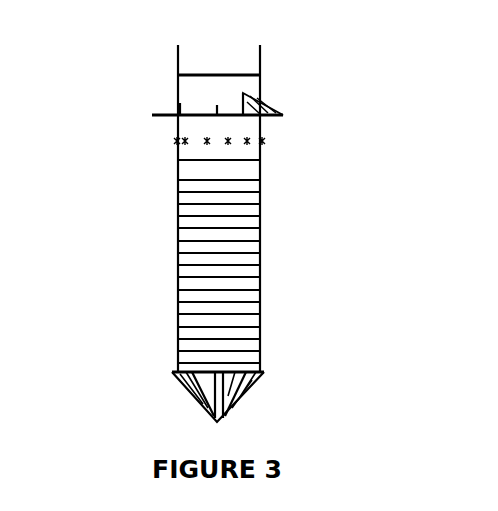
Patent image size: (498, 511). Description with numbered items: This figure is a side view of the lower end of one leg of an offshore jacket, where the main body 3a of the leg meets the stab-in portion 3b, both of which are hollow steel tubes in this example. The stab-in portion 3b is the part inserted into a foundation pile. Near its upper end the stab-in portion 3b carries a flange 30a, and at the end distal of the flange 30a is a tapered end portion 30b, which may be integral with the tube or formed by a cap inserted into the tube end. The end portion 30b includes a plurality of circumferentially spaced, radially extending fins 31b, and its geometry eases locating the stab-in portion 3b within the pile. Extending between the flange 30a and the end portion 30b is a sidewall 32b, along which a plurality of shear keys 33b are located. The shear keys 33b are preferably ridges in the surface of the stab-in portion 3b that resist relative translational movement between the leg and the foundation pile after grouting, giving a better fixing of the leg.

The main body 3a is at (227, 82).
The stab-in portion 3b is at (226, 261).
The flange 30a is at (163, 112).
The tapered end portion 30b is at (279, 391).
The fins 31b is at (203, 408).
The sidewall 32b is at (201, 264).
The shear keys 33b is at (183, 242).